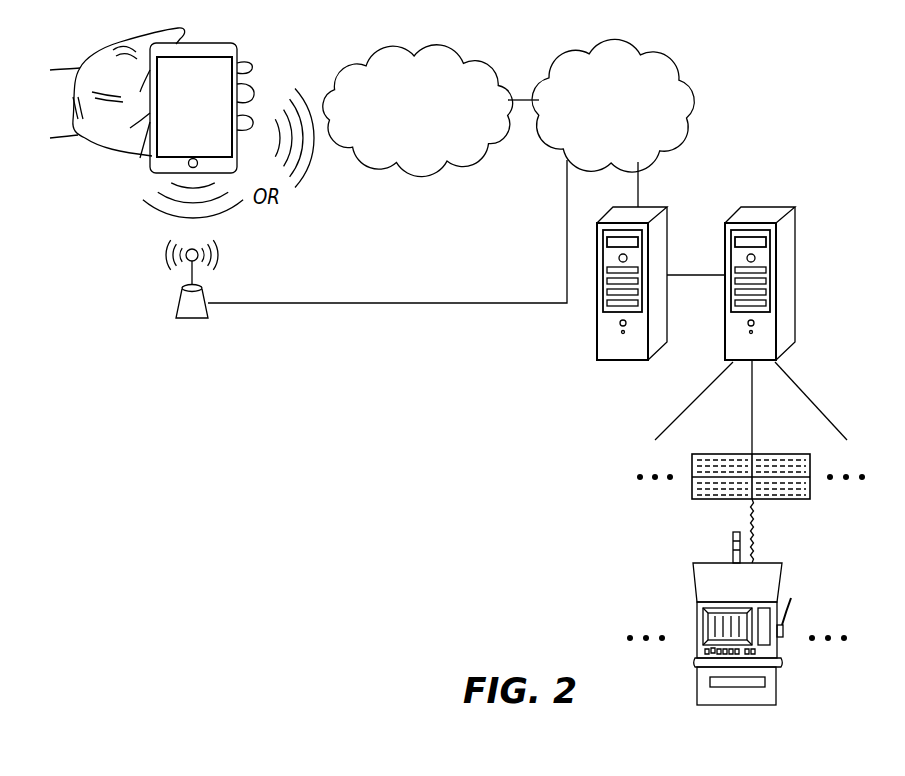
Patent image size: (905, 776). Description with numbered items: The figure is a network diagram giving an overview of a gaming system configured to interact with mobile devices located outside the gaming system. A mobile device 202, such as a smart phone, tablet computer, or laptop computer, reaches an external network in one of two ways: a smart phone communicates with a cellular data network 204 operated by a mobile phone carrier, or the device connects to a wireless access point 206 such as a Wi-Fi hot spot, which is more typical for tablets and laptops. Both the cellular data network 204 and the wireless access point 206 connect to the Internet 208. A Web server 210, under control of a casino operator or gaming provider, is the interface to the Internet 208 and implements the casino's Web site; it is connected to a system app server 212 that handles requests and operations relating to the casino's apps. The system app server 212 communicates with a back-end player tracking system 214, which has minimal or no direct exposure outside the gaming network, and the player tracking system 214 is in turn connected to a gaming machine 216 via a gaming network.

The mobile device 202 is at (237, 46).
The cellular data network 204 is at (441, 156).
The wireless access point 206 is at (177, 315).
The Internet 208 is at (636, 135).
The Web server 210 is at (667, 207).
The system app server 212 is at (795, 207).
The player tracking system 214 is at (810, 500).
The gaming machine 216 is at (776, 704).